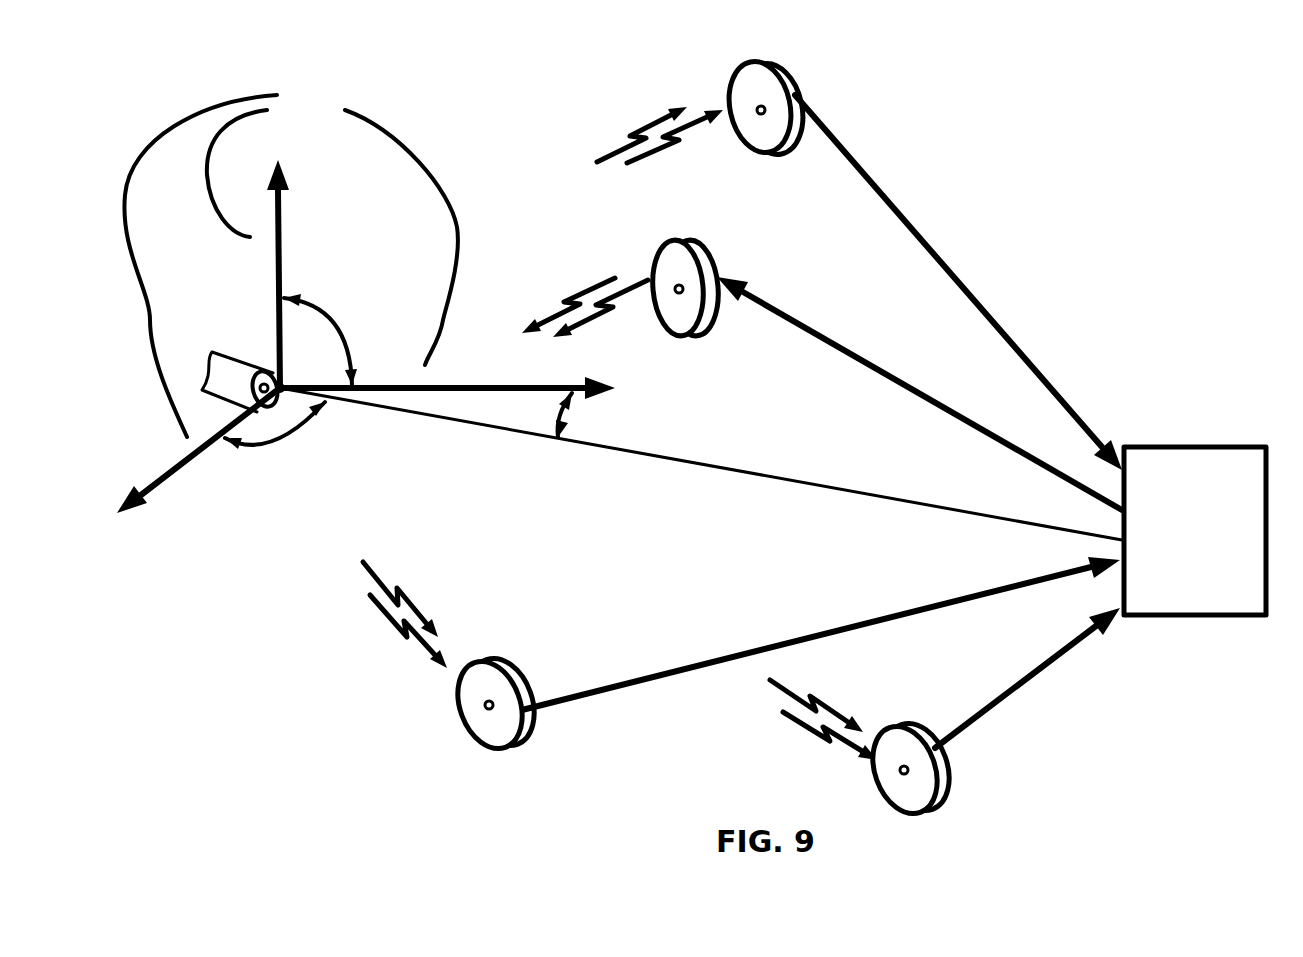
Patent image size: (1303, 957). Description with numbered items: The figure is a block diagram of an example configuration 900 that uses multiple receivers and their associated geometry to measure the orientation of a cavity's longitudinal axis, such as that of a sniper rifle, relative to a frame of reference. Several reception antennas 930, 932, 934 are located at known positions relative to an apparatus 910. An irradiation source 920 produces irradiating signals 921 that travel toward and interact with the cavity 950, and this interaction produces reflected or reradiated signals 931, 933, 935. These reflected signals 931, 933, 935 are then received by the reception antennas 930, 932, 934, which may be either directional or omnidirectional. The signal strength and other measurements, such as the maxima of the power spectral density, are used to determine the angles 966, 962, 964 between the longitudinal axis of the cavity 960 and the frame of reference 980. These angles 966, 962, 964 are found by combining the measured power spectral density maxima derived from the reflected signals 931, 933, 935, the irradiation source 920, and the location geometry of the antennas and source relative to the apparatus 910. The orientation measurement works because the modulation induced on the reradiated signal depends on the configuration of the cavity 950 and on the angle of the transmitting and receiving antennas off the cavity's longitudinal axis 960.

The system 900 is at (1088, 156).
The apparatus 910 is at (1195, 531).
The irradiation source 920 is at (707, 277).
The irradiating signals 921 is at (583, 280).
The reception antenna 930 is at (795, 95).
The reflected signal 931 is at (615, 142).
The reception antenna 932 is at (940, 800).
The reflected signal 933 is at (770, 713).
The reception antenna 934 is at (447, 730).
The reflected signal 935 is at (345, 605).
The cavity 950 is at (262, 412).
The longitudinal axis of the cavity 960 is at (828, 487).
The angle 962 is at (305, 437).
The angle 964 is at (588, 413).
The angle 966 is at (327, 322).
The frame of reference 980 is at (290, 266).